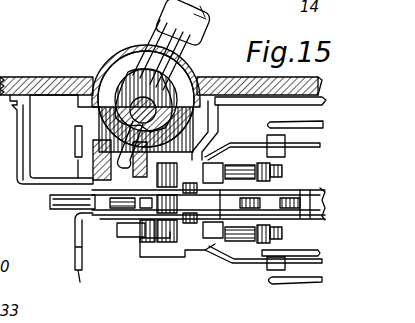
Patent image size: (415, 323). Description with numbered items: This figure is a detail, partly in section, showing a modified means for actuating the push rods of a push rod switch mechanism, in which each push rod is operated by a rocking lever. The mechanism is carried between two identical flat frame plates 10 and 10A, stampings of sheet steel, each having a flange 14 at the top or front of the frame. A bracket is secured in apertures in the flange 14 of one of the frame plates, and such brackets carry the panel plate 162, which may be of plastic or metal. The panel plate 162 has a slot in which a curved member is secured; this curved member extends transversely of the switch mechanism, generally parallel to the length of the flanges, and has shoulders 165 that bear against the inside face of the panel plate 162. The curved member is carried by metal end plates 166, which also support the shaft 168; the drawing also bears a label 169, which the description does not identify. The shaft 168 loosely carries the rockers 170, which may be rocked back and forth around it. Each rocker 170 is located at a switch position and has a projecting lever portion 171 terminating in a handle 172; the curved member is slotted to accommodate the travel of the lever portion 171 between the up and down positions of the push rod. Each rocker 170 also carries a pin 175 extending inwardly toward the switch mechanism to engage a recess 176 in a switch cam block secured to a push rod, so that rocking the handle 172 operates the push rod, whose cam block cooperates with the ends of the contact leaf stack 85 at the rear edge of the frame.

The frame plate 10 is at (95, 212).
The frame plate 10A is at (52, 195).
The flange 14 is at (74, 142).
The contact leaf stack 85 is at (290, 162).
The panel plate 162 is at (30, 77).
The shoulders 165 is at (205, 76).
The metal end plates 166 is at (219, 123).
The shaft 168 is at (112, 62).
The ring 169 is at (100, 70).
The rocker 170 is at (188, 70).
The lever portion 171 is at (162, 43).
The handle 172 is at (207, 15).
The pin 175 is at (74, 155).
The recess 176 is at (103, 140).